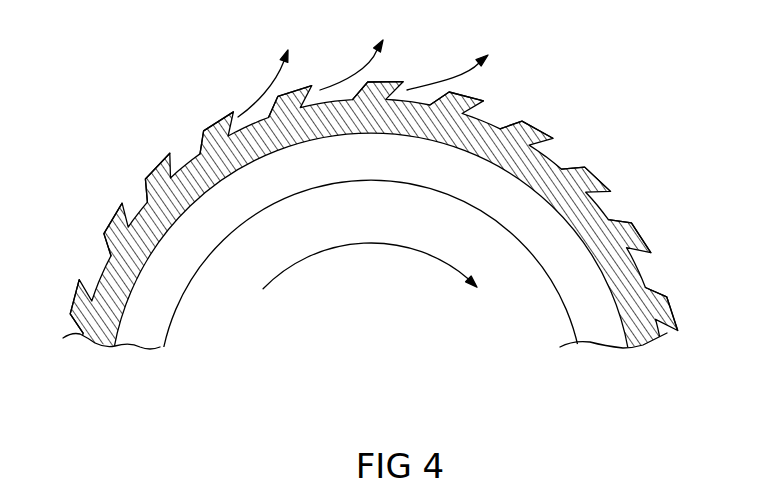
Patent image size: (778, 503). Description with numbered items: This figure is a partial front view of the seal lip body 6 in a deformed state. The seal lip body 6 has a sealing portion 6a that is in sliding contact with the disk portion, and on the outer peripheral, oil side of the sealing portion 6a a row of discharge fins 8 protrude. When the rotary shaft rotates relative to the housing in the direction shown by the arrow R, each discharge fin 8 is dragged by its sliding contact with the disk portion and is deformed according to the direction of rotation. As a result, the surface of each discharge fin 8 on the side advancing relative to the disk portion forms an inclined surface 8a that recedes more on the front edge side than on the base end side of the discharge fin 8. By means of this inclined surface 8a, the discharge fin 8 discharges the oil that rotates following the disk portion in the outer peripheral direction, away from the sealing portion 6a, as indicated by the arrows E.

The seal lip body 6 is at (603, 328).
The sealing portion 6a is at (647, 330).
The discharge fin 8 is at (80, 298).
The inclined surface 8a is at (110, 242).
The arrow E is at (368, 64).
The arrow R is at (370, 266).